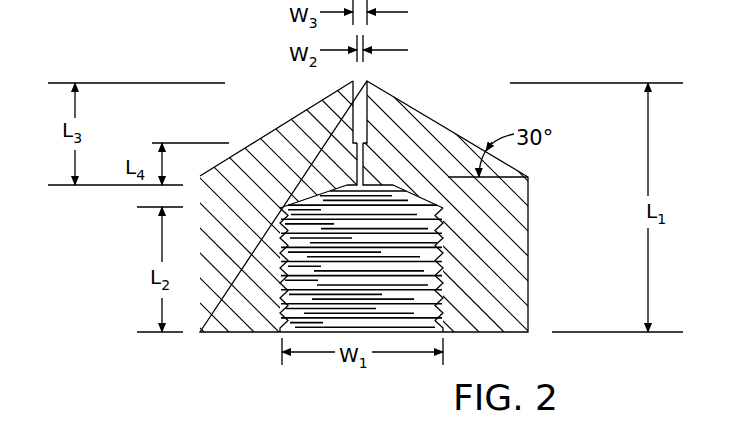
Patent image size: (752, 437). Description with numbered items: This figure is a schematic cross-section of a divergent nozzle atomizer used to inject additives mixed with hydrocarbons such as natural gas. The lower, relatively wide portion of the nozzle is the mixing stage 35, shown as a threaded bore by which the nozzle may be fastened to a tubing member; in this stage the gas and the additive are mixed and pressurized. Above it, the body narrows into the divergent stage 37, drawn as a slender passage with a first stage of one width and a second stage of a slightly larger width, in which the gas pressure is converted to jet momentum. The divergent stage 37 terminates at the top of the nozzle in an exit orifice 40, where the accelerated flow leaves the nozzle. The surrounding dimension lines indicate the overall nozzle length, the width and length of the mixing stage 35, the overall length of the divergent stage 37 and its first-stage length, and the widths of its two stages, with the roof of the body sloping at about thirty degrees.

The mixing stage 35 is at (353, 257).
The divergent stage 37 is at (385, 124).
The exit orifice 40 is at (363, 81).